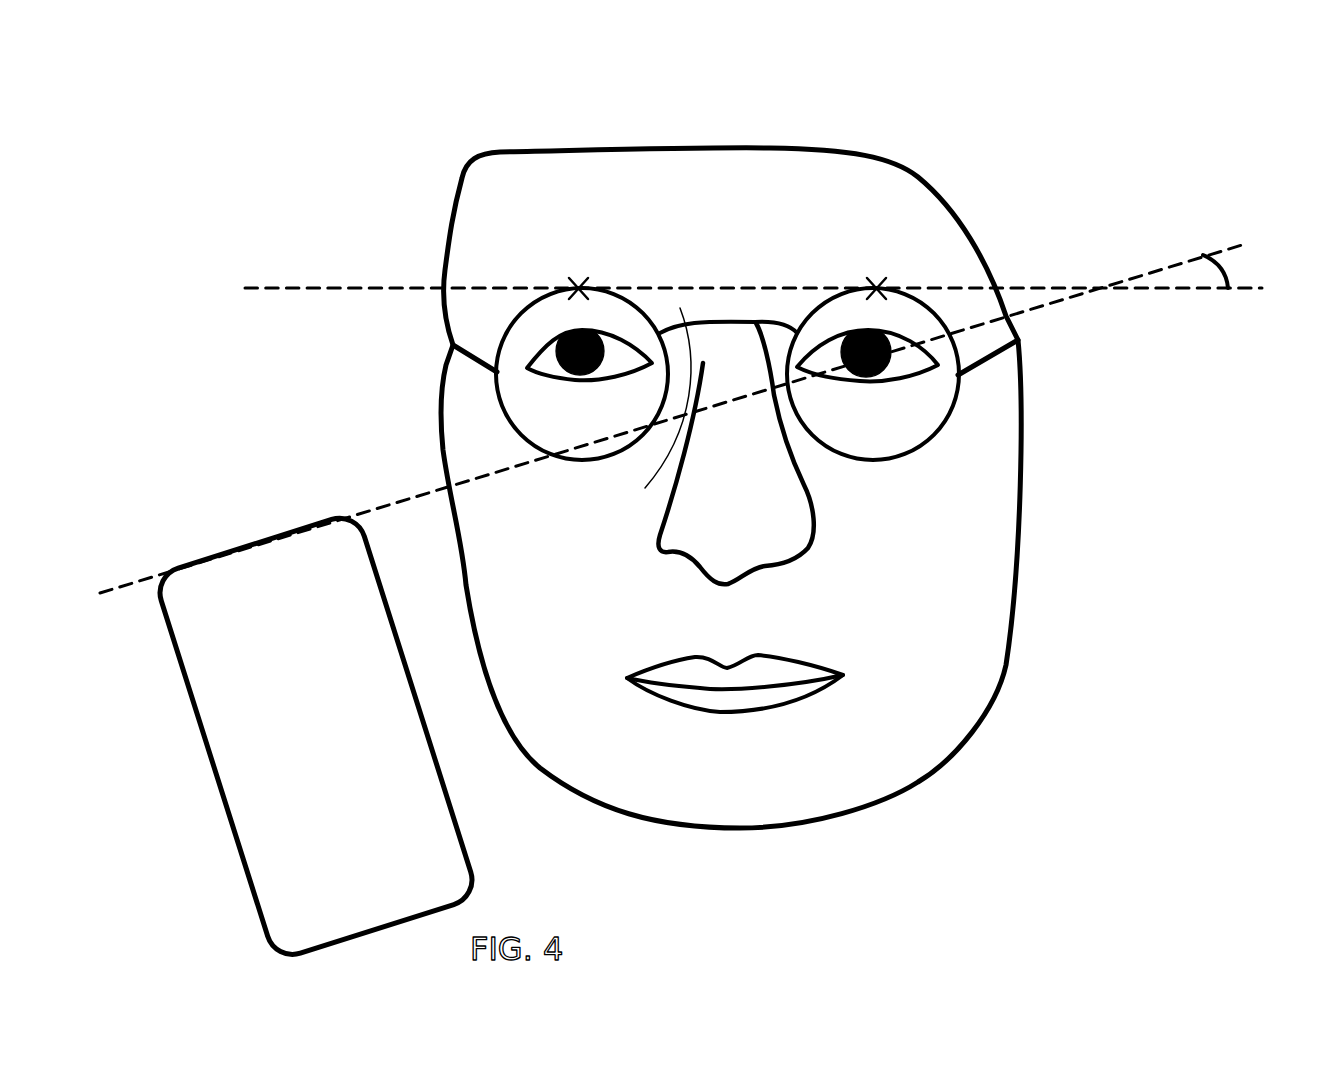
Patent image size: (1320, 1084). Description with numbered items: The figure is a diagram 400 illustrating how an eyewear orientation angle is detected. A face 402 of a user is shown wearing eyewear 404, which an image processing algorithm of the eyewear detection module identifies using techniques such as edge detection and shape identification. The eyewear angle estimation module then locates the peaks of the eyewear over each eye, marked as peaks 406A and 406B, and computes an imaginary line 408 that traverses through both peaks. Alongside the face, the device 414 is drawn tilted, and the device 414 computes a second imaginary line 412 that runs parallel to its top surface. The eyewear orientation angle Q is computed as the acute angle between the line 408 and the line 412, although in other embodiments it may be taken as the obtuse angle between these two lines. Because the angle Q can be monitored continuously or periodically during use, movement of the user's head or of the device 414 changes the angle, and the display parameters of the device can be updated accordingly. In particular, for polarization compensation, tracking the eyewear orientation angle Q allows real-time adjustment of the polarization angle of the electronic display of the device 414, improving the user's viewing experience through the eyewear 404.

The diagram 400 is at (1017, 134).
The face 402 is at (573, 183).
The eyewear 404 is at (890, 458).
The eyewear peak 406A is at (580, 282).
The eyewear peak 406B is at (877, 282).
The imaginary line 408 is at (340, 286).
The imaginary line 412 is at (414, 490).
The device 414 is at (315, 736).
The eyewear orientation angle Q is at (1228, 266).